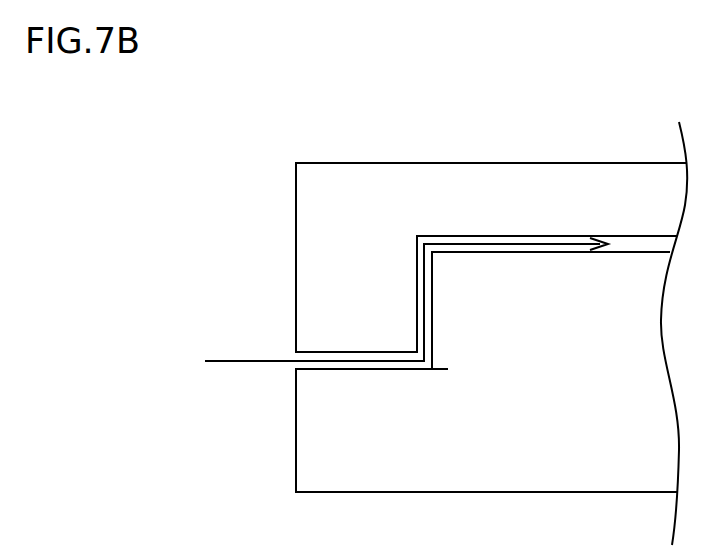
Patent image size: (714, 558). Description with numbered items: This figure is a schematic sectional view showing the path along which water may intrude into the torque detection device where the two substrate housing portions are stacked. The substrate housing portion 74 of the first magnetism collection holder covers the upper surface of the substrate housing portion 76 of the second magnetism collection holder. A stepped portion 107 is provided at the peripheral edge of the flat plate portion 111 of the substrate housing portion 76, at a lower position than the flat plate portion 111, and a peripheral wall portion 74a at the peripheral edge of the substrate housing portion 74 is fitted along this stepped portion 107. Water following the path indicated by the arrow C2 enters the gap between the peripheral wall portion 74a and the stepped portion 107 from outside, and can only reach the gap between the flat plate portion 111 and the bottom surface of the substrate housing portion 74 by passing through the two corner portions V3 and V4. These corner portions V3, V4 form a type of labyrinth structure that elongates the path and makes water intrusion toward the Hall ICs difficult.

The substrate housing portion 74 is at (530, 178).
The peripheral wall portion 74a is at (345, 357).
The substrate housing portion 76 is at (482, 482).
The flat plate portion 111 is at (487, 397).
The stepped portion 107 is at (424, 294).
The corner portion V4 is at (416, 236).
The corner portion V3 is at (433, 370).
The arrow indicating water intrusion path C2 is at (552, 247).